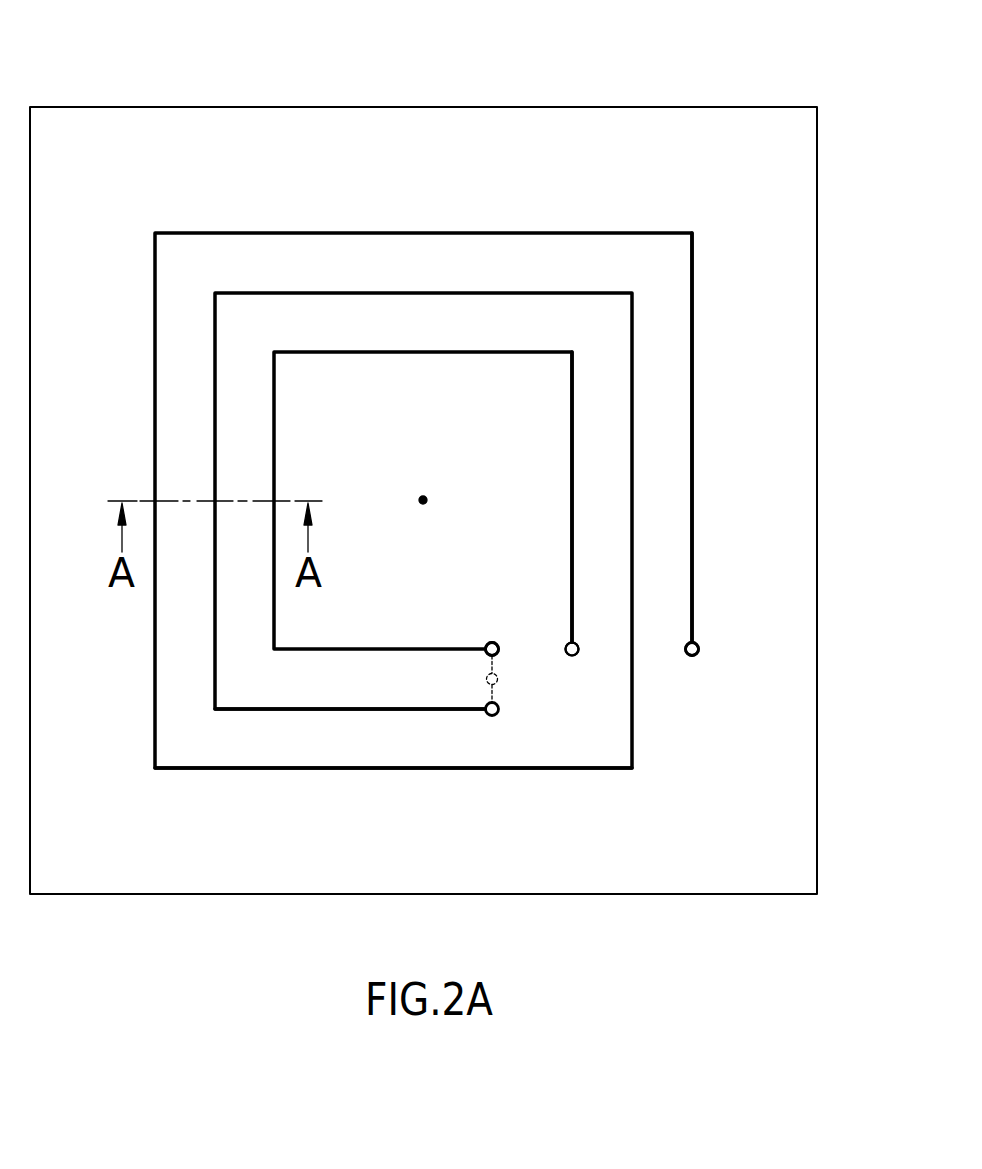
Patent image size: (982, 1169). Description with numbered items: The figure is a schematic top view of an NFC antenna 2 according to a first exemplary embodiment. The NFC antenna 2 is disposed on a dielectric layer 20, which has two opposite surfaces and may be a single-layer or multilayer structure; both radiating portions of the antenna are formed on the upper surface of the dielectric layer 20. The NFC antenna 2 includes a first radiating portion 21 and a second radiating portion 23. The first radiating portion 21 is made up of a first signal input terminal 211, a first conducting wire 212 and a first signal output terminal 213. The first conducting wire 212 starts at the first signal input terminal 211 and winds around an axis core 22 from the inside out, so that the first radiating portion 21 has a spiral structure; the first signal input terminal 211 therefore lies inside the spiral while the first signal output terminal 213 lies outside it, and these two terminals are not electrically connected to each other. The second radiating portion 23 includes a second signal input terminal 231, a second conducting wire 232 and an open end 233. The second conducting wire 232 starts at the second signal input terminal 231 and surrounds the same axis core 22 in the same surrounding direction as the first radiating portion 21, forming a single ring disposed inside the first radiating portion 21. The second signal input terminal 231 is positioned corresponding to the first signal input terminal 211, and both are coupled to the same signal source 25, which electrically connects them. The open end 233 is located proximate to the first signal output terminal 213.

The NFC antenna 2 is at (52, 37).
The dielectric layer 20 is at (795, 149).
The first radiating portion 21 is at (645, 830).
The first signal input terminal 211 is at (493, 716).
The first conducting wire 212 is at (463, 770).
The first signal output terminal 213 is at (692, 656).
The axis core 22 is at (423, 497).
The second radiating portion 23 is at (773, 498).
The second signal input terminal 231 is at (493, 642).
The second conducting wire 232 is at (572, 456).
The open end 233 is at (577, 643).
The signal source 25 is at (486, 679).